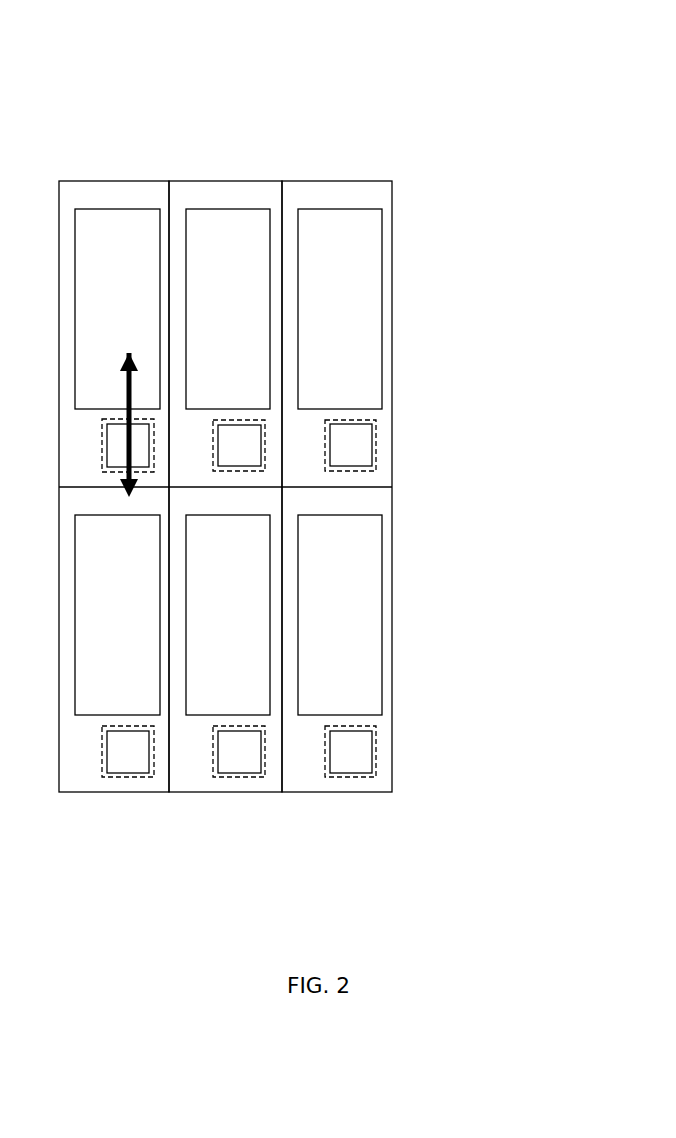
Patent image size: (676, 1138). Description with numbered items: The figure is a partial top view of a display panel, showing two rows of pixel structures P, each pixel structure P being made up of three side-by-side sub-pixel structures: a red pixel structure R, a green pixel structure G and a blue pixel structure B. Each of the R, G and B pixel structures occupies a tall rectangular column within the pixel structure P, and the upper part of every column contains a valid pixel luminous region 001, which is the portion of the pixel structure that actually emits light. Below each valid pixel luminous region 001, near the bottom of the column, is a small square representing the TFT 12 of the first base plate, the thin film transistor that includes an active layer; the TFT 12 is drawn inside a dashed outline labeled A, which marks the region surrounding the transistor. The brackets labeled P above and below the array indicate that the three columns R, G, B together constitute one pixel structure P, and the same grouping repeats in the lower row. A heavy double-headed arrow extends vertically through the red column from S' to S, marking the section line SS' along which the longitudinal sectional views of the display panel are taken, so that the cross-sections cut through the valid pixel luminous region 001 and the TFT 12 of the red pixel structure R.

The pixel structure P is at (318, 103).
The red pixel structure R is at (113, 181).
The green pixel structure G is at (224, 181).
The blue pixel structure B is at (340, 181).
The valid pixel luminous region 001 is at (160, 262).
The TFT 12 is at (141, 441).
The region A is at (301, 598).
The section line endpoint S is at (128, 443).
The section line endpoint S' is at (138, 342).